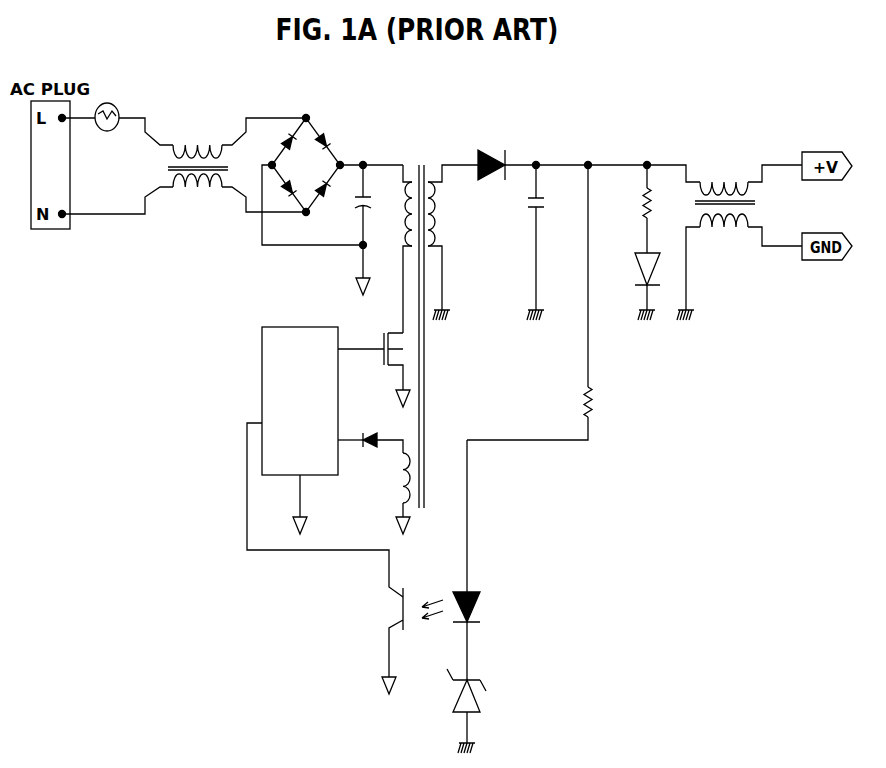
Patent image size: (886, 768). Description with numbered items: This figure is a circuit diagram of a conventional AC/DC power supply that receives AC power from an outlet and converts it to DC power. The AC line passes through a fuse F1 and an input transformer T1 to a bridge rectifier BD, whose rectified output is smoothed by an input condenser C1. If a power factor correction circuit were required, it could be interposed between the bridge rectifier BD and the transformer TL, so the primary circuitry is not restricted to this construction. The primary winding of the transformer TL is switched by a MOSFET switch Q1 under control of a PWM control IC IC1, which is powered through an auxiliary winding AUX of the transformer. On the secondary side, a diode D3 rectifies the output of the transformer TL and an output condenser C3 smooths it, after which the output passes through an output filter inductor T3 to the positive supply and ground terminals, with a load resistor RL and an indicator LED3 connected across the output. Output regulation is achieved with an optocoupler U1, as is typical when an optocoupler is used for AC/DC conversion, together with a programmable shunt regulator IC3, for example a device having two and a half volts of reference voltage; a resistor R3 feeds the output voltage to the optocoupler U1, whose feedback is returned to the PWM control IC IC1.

The fuse F1 is at (134, 128).
The input transformer T1 is at (237, 160).
The bridge rectifier BD is at (307, 162).
The input condenser C1 is at (374, 230).
The transformer TL is at (440, 323).
The diode D3 is at (491, 154).
The output condenser C3 is at (547, 242).
The feedback resistor R3 is at (542, 302).
The load resistor RL is at (634, 209).
The indicator LED LED3 is at (625, 286).
The output filter inductor / transformer T3 is at (739, 233).
The PWM control IC IC1 is at (325, 449).
The MOSFET switch Q1 is at (387, 358).
The auxiliary winding supply AUX is at (382, 483).
The optocoupler U1 is at (431, 567).
The programmable shunt regulator IC3 is at (485, 711).